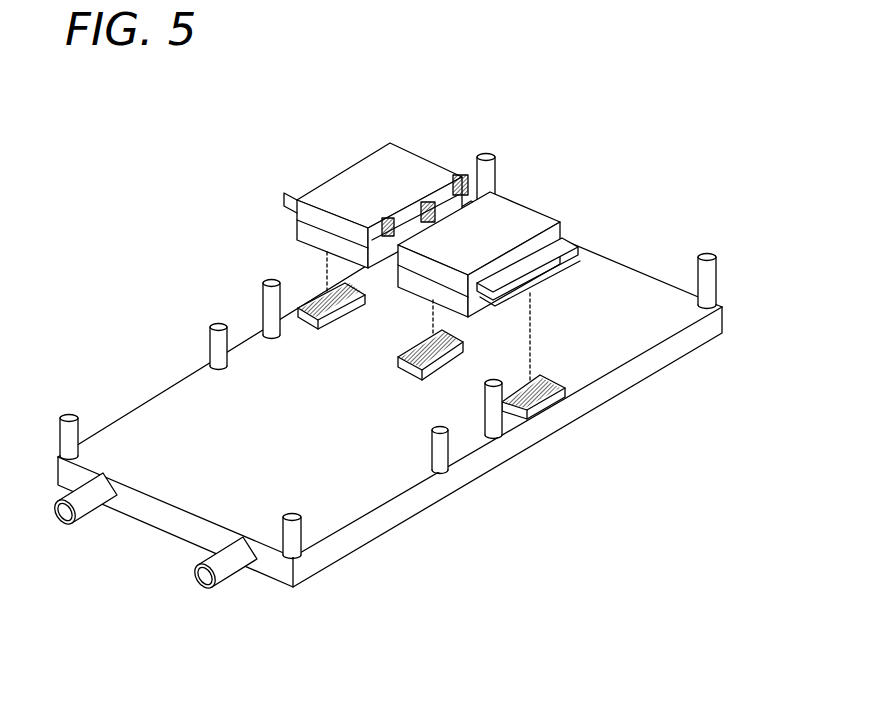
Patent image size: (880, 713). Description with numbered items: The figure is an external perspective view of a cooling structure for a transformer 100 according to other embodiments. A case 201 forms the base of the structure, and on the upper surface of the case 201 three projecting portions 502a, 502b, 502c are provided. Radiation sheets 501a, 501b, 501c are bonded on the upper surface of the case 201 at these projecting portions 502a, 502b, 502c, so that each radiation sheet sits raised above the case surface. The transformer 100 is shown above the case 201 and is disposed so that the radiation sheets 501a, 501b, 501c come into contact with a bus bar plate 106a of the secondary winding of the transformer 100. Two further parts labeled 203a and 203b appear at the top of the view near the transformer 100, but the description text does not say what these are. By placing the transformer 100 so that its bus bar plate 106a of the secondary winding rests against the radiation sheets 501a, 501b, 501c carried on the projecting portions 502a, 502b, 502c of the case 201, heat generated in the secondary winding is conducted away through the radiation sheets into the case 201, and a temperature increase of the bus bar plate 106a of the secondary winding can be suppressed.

The transformer 100 is at (520, 188).
The bus bar plate of the secondary winding 106a is at (283, 200).
The case 201 is at (260, 430).
The connector terminal 203a is at (418, 119).
The connector terminal 203b is at (472, 0).
The radiation sheet 501a is at (328, 295).
The radiation sheet 501b is at (417, 352).
The radiation sheet 501c is at (540, 387).
The projecting portion 502a is at (297, 313).
The projecting portion 502b is at (413, 368).
The projecting portion 502c is at (542, 410).